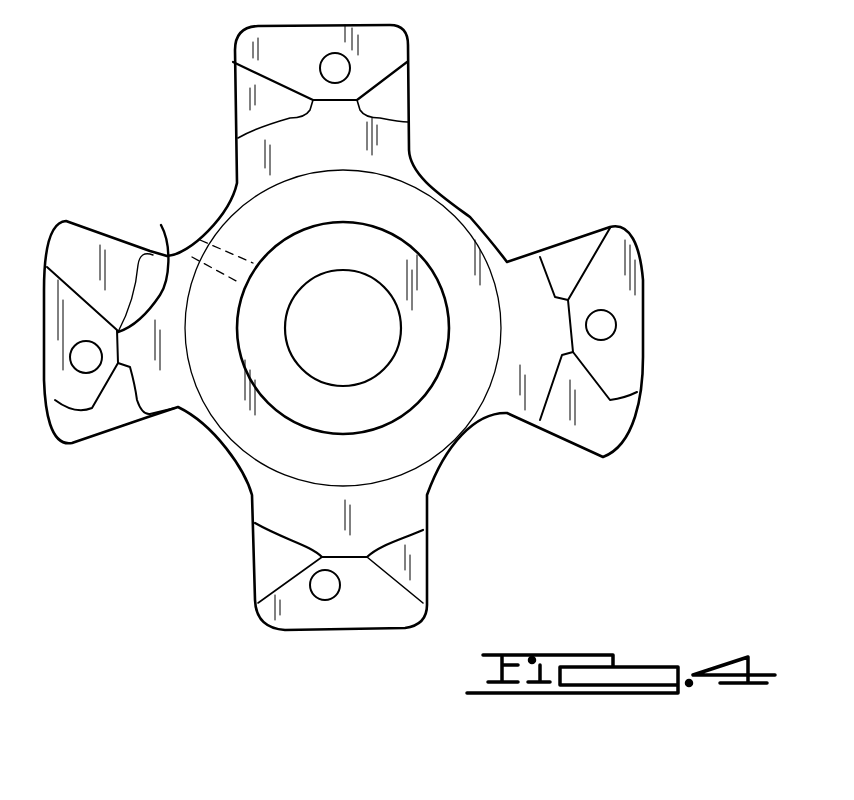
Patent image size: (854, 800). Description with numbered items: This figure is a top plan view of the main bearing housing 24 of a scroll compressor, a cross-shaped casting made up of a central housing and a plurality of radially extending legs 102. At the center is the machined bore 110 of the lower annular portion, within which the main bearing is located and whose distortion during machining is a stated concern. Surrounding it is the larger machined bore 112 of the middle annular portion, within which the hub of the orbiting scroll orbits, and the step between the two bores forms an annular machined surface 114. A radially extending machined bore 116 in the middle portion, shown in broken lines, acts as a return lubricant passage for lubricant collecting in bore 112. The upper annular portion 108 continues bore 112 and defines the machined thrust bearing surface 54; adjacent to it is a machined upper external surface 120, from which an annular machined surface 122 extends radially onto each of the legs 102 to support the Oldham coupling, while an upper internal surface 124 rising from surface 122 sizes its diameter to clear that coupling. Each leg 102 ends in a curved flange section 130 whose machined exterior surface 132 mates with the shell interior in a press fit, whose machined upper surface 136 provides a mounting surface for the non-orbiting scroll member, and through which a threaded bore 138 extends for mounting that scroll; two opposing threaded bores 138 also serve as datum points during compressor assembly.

The main bearing housing 24 is at (561, 152).
The machined thrust bearing surface 54 is at (348, 472).
The radially extending legs 102 is at (387, 133).
The upper annular portion 108 is at (420, 223).
The machined bore 110 is at (289, 305).
The machined bore 112 is at (266, 362).
The annular machined surface 114 is at (413, 388).
The radially extending machined bore 116 is at (198, 223).
The upper external surface 120 is at (503, 283).
The annular machined surface 122 is at (550, 340).
The upper internal surface 124 is at (144, 264).
The curved flange section 130 is at (72, 232).
The exterior surface 132 is at (347, 636).
The upper surface 136 is at (630, 352).
The threaded bore 138 is at (320, 595).